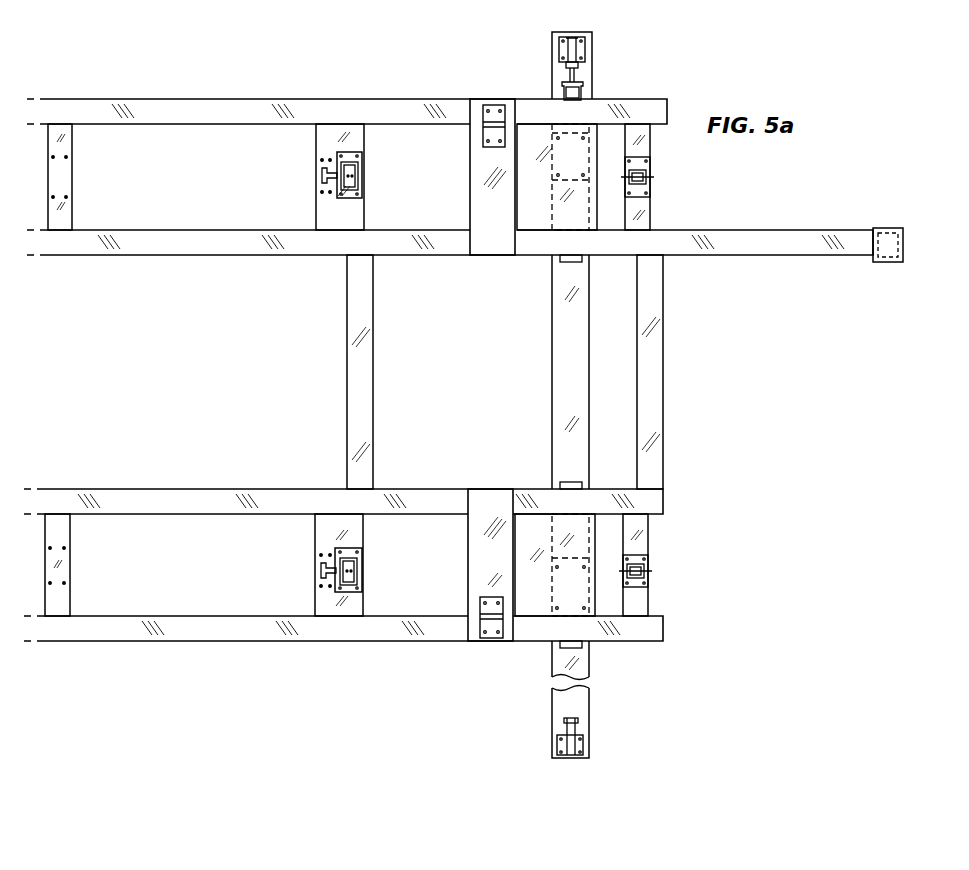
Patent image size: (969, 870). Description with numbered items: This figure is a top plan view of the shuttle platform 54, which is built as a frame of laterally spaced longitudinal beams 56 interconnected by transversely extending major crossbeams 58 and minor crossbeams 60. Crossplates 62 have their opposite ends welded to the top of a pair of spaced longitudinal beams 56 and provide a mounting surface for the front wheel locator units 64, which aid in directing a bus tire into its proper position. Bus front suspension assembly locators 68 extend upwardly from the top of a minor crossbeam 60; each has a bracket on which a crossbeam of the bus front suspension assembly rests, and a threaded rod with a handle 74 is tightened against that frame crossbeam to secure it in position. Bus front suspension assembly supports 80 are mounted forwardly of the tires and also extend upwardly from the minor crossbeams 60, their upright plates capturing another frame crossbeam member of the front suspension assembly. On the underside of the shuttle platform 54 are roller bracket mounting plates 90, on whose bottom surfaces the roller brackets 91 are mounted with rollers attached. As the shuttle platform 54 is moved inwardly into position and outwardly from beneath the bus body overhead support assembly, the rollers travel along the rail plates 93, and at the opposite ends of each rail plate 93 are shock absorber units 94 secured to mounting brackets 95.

The shuttle platform 54 is at (463, 392).
The longitudinal beams 56 is at (143, 104).
The major crossbeams 58 is at (367, 394).
The minor crossbeams 60 is at (67, 213).
The crossplates 62 is at (482, 157).
The front wheel locator units 64 is at (507, 104).
The bus front suspension assembly locators 68 is at (368, 177).
The handle 74 is at (317, 178).
The bus front suspension assembly supports 80 is at (659, 174).
The roller bracket mounting plates 90 is at (550, 216).
The roller brackets 91 is at (548, 160).
The rail plates 93 is at (580, 668).
The shock absorber units 94 is at (583, 70).
The mounting brackets 95 is at (585, 47).